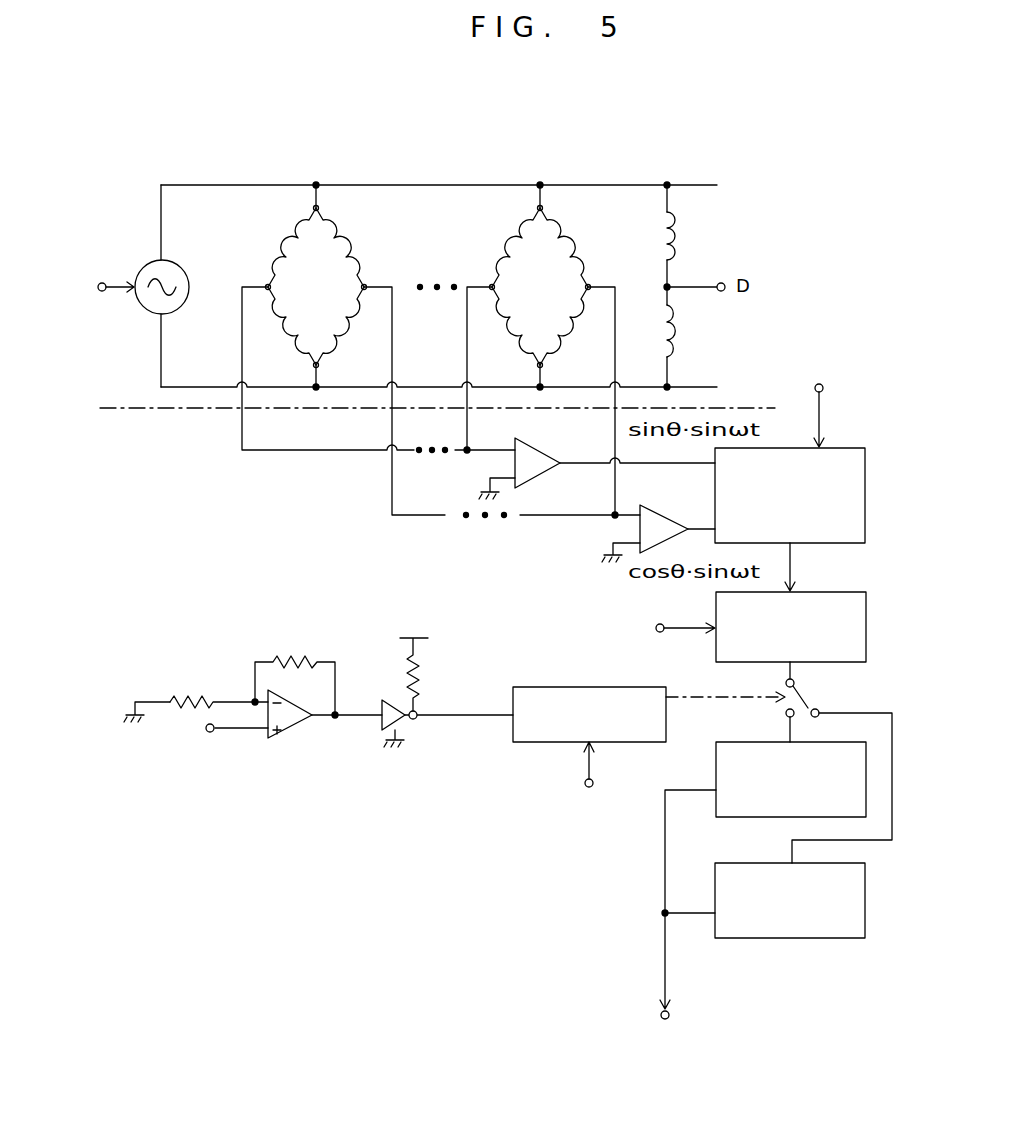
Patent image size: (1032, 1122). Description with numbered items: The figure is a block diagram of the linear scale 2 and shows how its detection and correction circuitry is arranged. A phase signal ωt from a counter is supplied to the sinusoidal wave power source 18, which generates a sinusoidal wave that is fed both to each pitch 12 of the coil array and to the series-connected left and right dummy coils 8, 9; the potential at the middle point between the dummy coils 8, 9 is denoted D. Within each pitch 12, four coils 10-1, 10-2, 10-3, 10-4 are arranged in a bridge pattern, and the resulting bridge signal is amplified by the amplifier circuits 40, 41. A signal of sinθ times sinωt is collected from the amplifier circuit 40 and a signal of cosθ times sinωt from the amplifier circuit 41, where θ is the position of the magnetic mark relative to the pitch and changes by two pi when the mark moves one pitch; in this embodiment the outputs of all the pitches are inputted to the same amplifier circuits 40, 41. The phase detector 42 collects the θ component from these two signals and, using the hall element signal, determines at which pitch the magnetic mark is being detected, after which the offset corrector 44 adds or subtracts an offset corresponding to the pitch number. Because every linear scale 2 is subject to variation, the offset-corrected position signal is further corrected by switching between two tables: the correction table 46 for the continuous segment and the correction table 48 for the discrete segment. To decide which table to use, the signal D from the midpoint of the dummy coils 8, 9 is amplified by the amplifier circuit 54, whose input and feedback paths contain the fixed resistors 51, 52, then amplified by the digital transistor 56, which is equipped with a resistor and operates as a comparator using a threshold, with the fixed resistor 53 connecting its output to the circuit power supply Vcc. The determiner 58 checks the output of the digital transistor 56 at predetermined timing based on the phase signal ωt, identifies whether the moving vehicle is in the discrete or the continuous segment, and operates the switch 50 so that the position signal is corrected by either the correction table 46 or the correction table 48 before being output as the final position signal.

The linear scale 2 is at (454, 1044).
The dummy coil 8 is at (683, 238).
The dummy coil 9 is at (683, 334).
The coil 10-1 is at (290, 233).
The coil 10-2 is at (343, 245).
The coil 10-3 is at (286, 335).
The coil 10-4 is at (339, 335).
The pitch 12 is at (375, 261).
The sinusoidal wave power source 18 is at (183, 272).
The amplifier circuit 40 is at (543, 458).
The amplifier circuit 41 is at (667, 516).
The phase detector 42 is at (840, 448).
The offset corrector 44 is at (840, 592).
The correction table 46 is at (735, 821).
The correction table 48 is at (770, 940).
The switch 50 is at (808, 698).
The fixed resistor 51 is at (195, 690).
The fixed resistor 52 is at (295, 660).
The fixed resistor 53 is at (424, 681).
The amplifier circuit 54 is at (298, 728).
The digital transistor 56 is at (395, 700).
The determiner 58 is at (530, 687).